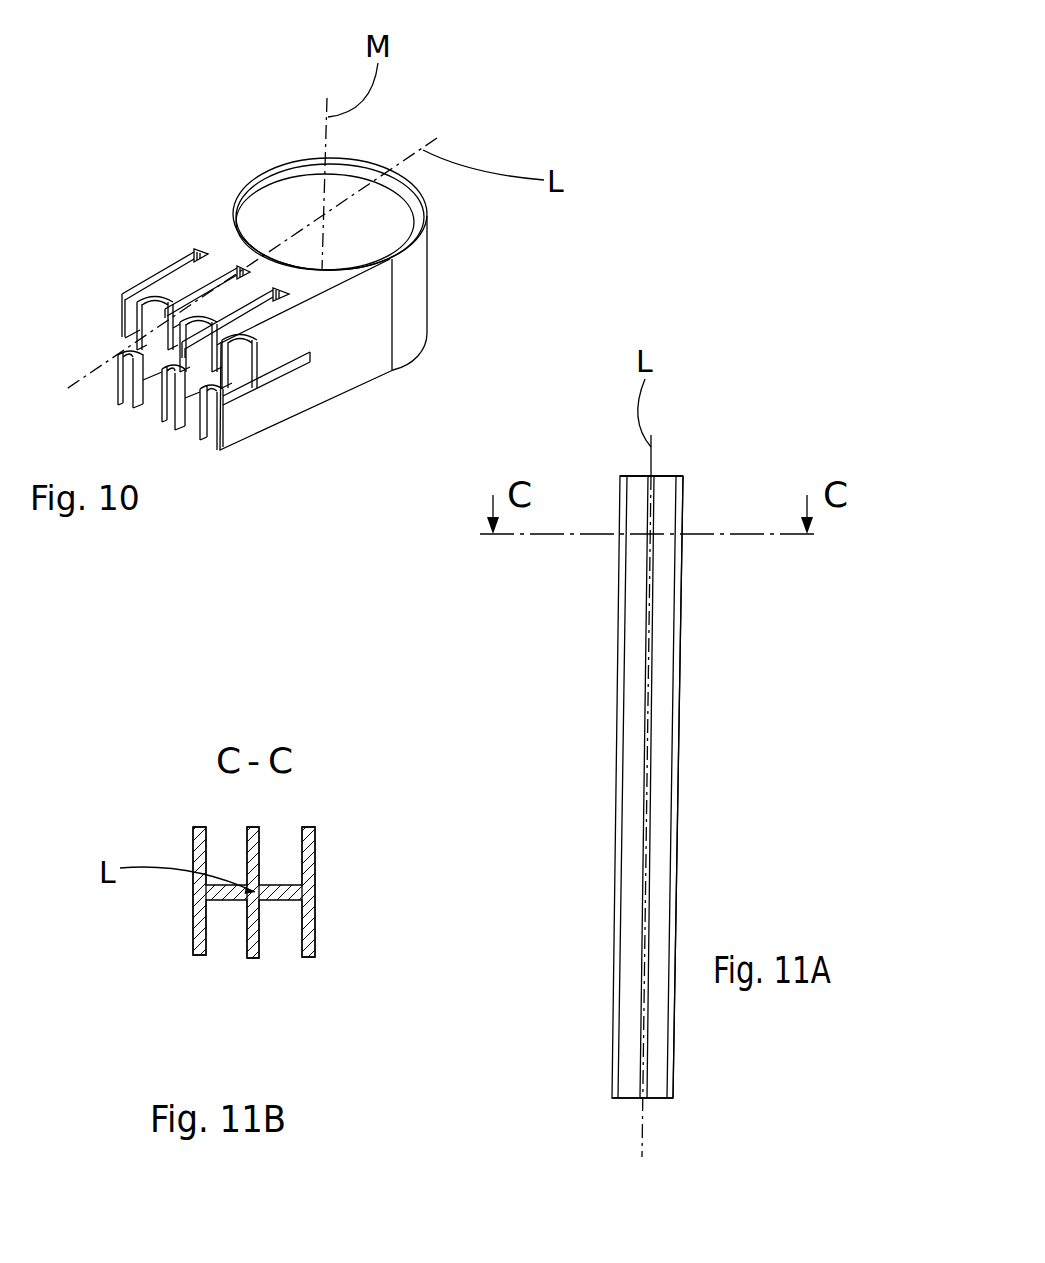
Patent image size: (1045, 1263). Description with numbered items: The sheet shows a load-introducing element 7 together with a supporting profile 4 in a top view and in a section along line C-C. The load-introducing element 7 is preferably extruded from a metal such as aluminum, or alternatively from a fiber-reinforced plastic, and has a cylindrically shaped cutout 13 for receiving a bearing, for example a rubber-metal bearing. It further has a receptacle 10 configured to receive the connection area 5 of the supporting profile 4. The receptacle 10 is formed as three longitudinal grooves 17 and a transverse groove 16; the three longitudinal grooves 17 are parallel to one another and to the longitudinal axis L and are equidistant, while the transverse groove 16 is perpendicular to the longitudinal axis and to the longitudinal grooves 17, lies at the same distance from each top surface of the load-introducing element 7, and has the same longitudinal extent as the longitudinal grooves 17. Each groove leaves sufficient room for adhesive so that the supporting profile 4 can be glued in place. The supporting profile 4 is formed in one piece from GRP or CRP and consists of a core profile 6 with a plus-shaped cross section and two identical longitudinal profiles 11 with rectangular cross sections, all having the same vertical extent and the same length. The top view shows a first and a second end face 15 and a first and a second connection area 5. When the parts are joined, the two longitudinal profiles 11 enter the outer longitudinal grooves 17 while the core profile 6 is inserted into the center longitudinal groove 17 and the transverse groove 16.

In FIG. 11A, the supporting profile 4 is at (605, 757).
In FIG. 11B, the supporting profile 4 is at (318, 818).
In FIG. 11A, the connection area 5 is at (698, 503).
In FIG. 11A, the core profile 6 is at (654, 625).
In FIG. 11B, the core profile 6 is at (232, 900).
In FIG. 10, the load-introducing element 7 is at (245, 145).
In FIG. 10, the receptacle 10 is at (168, 250).
In FIG. 11A, the longitudinal profile 11 is at (619, 683).
In FIG. 11B, the longitudinal profile 11 is at (198, 946).
In FIG. 10, the cutout 13 is at (378, 225).
In FIG. 11A, the end face 15 is at (672, 455).
In FIG. 10, the transverse groove 16 is at (283, 368).
In FIG. 10, the longitudinal groove 17 is at (270, 298).